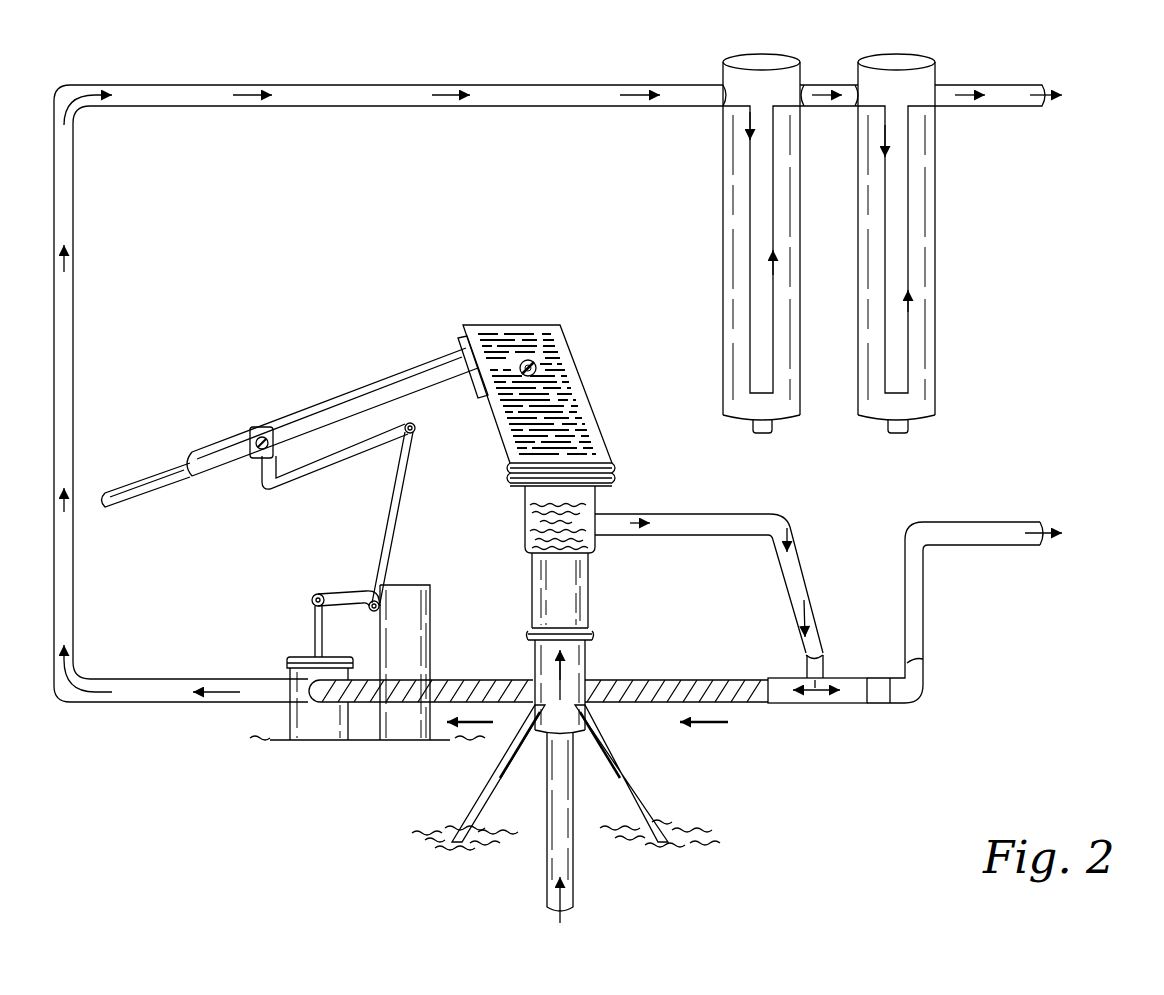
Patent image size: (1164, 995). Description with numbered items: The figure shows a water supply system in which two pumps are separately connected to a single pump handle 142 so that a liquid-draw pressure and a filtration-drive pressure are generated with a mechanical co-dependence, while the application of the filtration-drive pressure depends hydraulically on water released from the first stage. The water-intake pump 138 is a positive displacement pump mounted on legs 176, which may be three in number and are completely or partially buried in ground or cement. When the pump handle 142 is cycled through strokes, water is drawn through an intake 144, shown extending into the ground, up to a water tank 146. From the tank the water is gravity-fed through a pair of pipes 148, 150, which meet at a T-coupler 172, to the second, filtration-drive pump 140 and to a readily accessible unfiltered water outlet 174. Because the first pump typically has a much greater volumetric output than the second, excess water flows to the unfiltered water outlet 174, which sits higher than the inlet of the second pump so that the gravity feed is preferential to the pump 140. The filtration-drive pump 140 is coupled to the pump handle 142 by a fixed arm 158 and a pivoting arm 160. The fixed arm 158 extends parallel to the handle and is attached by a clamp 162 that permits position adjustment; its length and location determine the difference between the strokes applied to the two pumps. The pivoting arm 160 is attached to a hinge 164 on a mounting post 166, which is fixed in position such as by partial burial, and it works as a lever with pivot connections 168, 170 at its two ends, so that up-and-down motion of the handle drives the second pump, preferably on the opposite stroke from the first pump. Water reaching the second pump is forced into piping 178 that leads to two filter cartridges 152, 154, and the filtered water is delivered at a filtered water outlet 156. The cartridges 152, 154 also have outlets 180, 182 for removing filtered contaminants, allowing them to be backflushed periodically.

The water-intake pump 138 is at (588, 395).
The filtration-drive pump 140 is at (297, 654).
The pump handle 142 is at (357, 397).
The intake 144 is at (581, 873).
The water tank 146 is at (597, 493).
The pipe 148 is at (710, 514).
The pipe 150 is at (694, 680).
The filter cartridge 152 is at (769, 62).
The filter cartridge 154 is at (904, 62).
The filtered water outlet 156 is at (1005, 87).
The fixed arm 158 is at (318, 471).
The pivoting arm 160 is at (390, 535).
The clamp 162 is at (255, 427).
The hinge 164 is at (372, 599).
The mounting post 166 is at (432, 628).
The pivot connection 168 is at (416, 430).
The pivot connection 170 is at (316, 597).
The T-coupler 172 is at (816, 706).
The unfiltered water outlet 174 is at (999, 548).
The legs 176 is at (483, 772).
The piping 178 is at (364, 89).
The outlet for removal of filtered contaminants 180 is at (769, 435).
The outlet for removal of filtered contaminants 182 is at (903, 435).